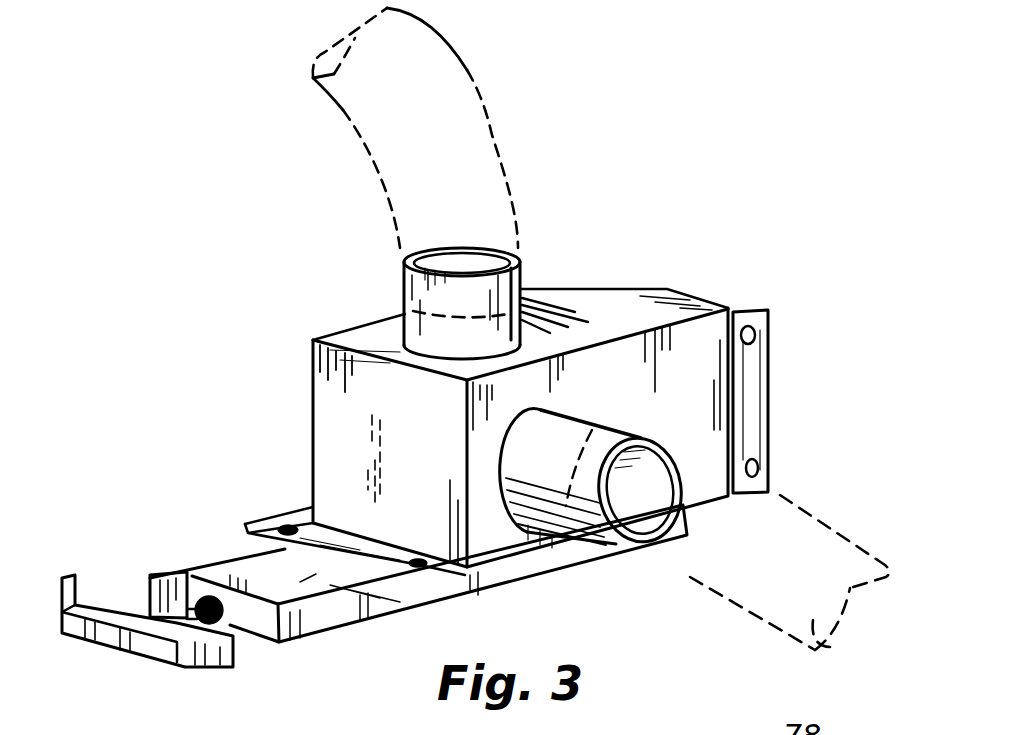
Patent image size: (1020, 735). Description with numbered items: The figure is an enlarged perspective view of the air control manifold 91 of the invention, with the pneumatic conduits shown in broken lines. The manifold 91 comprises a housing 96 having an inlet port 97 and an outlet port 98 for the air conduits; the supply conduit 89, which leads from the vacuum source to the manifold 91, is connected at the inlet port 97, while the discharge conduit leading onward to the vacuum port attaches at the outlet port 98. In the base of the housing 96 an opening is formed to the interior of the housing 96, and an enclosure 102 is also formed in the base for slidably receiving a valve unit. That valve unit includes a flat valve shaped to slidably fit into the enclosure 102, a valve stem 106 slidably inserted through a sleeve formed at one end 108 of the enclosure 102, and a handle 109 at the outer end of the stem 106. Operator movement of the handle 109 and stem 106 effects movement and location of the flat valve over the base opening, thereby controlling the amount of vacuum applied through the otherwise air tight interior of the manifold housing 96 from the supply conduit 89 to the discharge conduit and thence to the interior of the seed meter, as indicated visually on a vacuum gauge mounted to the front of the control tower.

The air control manifold 91 is at (625, 243).
The housing 96 is at (636, 300).
The outlet port 98 is at (400, 291).
The inlet port 97 is at (638, 513).
The supply conduit 89 is at (822, 522).
The enclosure 102 is at (508, 574).
The valve stem 106 is at (191, 572).
The end of the enclosure 108 is at (147, 583).
The handle 109 is at (150, 649).